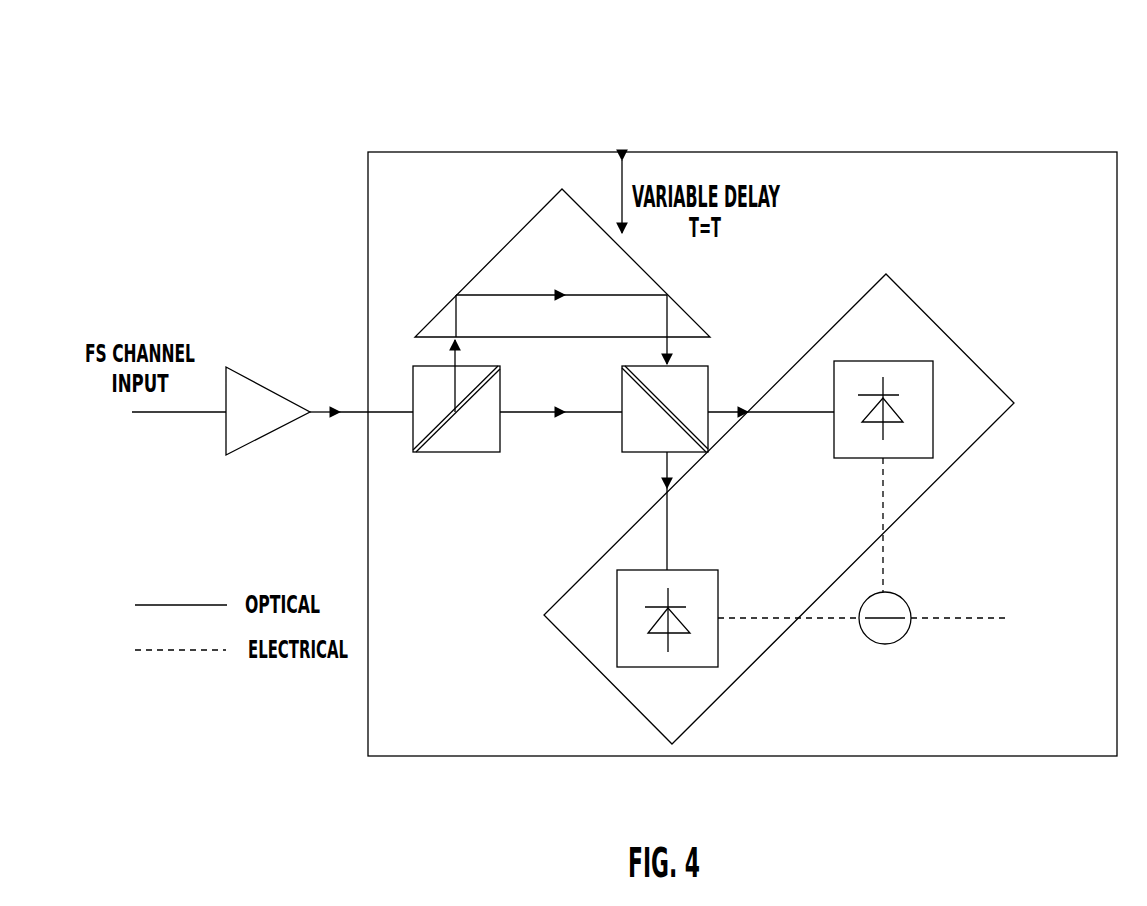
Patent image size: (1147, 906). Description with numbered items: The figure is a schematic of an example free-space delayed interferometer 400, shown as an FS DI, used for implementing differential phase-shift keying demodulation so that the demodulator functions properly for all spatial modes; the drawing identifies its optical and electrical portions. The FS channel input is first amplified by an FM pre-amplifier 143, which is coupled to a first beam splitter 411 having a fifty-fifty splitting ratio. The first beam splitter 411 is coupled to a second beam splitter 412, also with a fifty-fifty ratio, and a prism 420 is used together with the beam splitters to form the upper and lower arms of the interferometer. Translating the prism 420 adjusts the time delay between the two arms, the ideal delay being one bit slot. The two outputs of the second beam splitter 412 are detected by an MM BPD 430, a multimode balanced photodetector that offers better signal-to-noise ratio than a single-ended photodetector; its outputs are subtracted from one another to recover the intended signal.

The FM pre-amplifier 143 is at (265, 392).
The FS delayed interferometer 400 is at (940, 148).
The first beam splitter 411 is at (478, 452).
The second beam splitter 412 is at (647, 452).
The prism 420 is at (553, 218).
The MM BPD 430 is at (978, 372).